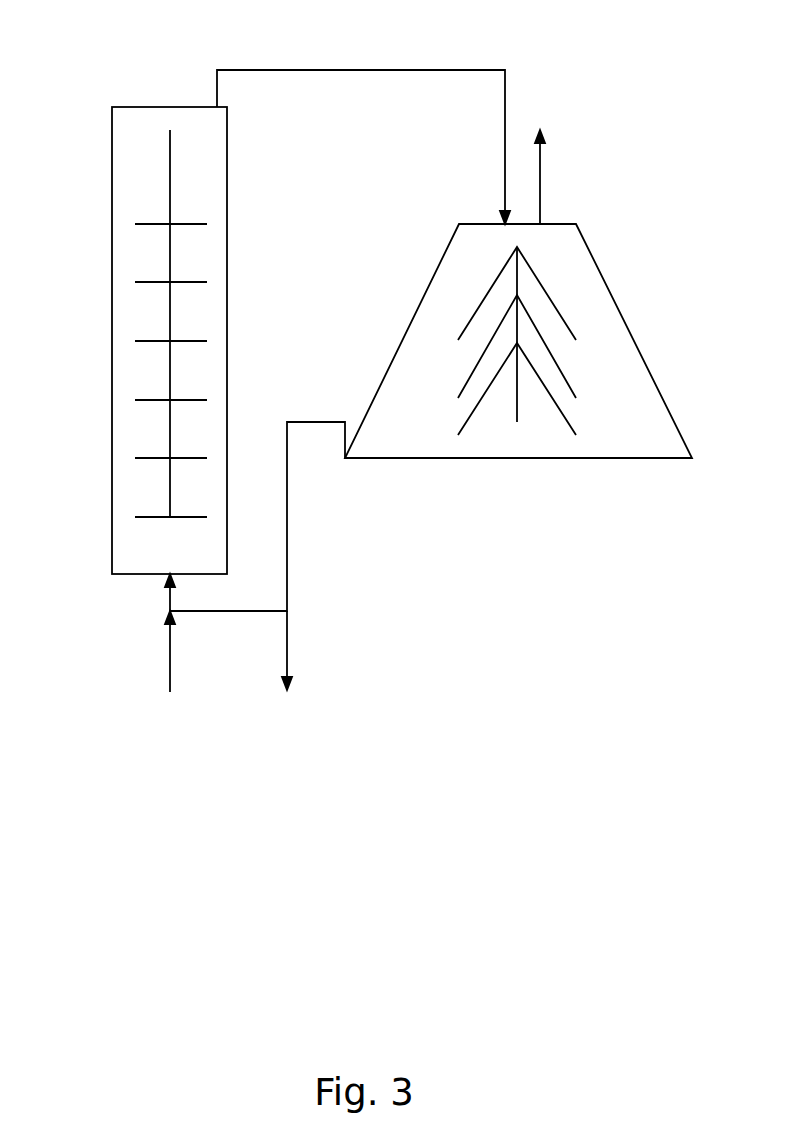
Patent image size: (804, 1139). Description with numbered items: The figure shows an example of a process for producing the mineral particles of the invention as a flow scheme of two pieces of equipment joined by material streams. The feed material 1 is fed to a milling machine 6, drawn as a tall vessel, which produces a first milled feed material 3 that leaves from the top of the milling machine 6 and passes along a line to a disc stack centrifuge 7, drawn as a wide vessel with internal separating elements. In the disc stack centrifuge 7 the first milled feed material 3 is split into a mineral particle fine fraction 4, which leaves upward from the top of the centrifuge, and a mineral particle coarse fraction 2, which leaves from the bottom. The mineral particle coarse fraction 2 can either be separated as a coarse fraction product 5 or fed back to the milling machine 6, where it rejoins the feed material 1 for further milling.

The feed material 1 is at (170, 663).
The mineral particle coarse fraction 2 is at (257, 516).
The first milled feed material 3 is at (363, 117).
The mineral particle fine fraction 4 is at (561, 164).
The coarse fraction product 5 is at (285, 682).
The milling machine 6 is at (137, 303).
The disc stack centrifuge 7 is at (598, 352).